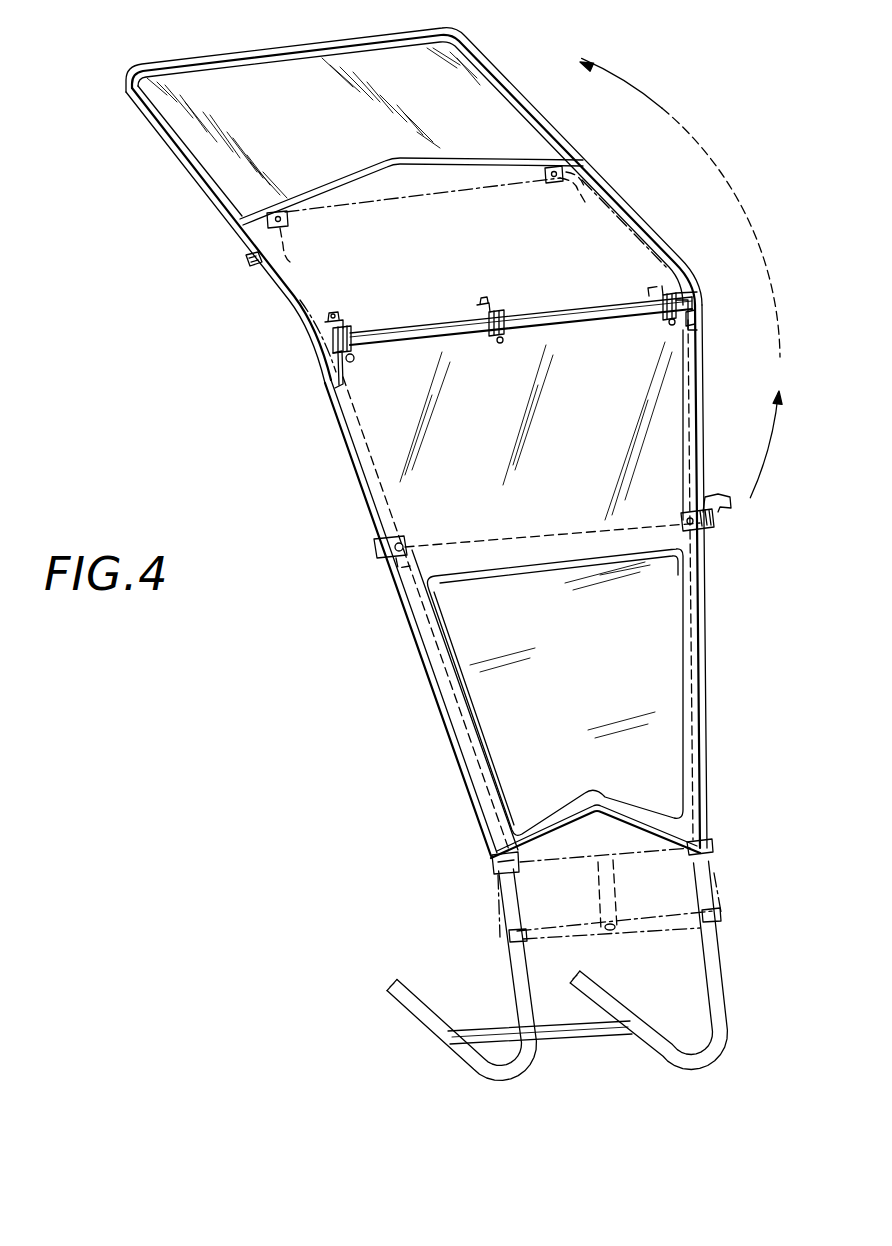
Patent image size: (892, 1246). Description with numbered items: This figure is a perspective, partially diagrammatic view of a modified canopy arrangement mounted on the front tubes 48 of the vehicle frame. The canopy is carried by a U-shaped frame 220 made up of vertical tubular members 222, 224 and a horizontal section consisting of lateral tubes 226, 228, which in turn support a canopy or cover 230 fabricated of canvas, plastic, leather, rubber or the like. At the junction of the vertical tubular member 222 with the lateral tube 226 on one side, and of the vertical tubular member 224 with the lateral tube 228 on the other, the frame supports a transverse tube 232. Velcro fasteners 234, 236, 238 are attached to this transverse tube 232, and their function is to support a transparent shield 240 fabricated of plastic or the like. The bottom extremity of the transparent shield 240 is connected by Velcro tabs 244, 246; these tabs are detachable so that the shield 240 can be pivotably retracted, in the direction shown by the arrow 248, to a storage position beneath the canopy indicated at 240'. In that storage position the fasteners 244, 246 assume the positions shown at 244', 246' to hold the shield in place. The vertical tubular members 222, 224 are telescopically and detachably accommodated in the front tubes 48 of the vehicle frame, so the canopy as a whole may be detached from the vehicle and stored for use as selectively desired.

The front tubes 48 is at (710, 875).
The U-shaped frame 220 is at (589, 148).
The vertical tubular member 222 is at (700, 324).
The vertical tubular member 224 is at (331, 378).
The lateral tube 226 is at (650, 221).
The lateral tube 228 is at (282, 297).
The canopy 230 is at (486, 84).
The transverse tube 232 is at (582, 306).
The Velcro fastener 234 is at (347, 330).
The Velcro fastener 236 is at (500, 306).
The Velcro fastener 238 is at (697, 303).
The transparent shield 240 is at (584, 588).
The storage position of transparent shield 240' is at (638, 224).
The Velcro tab 244 is at (378, 569).
The position of Velcro tab 244' is at (230, 276).
The Velcro tab 246 is at (725, 525).
The position of Velcro tab 246' is at (601, 177).
The arrow 248 is at (768, 458).